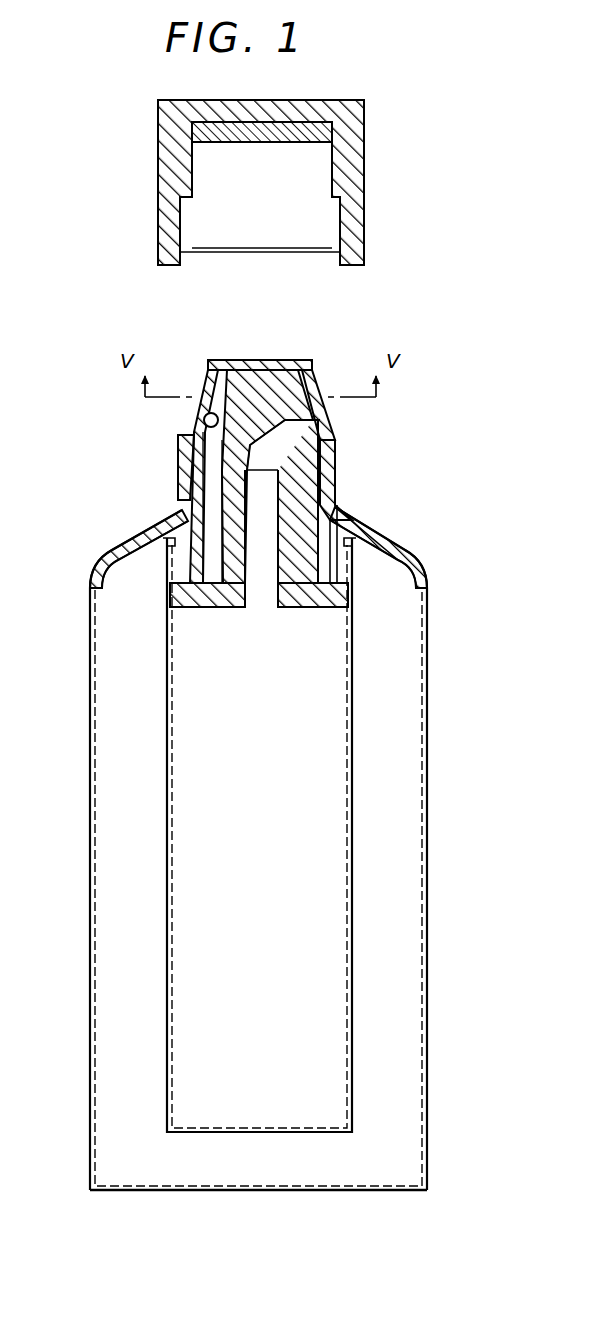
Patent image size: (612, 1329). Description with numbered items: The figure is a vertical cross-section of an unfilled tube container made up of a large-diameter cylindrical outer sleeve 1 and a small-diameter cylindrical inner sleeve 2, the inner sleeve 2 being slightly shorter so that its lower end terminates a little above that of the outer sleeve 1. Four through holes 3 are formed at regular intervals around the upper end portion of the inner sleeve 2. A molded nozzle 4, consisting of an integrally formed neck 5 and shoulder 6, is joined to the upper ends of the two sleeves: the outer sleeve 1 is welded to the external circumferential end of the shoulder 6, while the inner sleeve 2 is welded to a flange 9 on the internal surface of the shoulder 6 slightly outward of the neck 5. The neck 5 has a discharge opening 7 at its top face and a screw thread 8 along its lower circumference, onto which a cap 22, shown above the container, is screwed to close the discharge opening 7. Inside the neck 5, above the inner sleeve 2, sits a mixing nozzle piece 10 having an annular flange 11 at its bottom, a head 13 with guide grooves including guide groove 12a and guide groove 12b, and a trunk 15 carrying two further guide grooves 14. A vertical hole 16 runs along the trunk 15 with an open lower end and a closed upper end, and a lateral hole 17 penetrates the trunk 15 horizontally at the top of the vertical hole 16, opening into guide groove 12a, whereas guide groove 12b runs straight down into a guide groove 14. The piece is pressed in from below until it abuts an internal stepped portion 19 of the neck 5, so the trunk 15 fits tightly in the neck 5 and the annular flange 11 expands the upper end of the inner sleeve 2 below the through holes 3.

The outer sleeve 1 is at (430, 818).
The inner sleeve 2 is at (352, 915).
The through holes 3 is at (128, 548).
The nozzle 4 is at (255, 482).
The neck 5 is at (331, 430).
The shoulder 6 is at (355, 576).
The discharge opening 7 is at (235, 365).
The screw thread 8 is at (338, 492).
The flange 9 is at (137, 540).
The mixing nozzle piece 10 is at (322, 422).
The annular flange 11 is at (218, 590).
The guide groove 12a is at (305, 362).
The guide groove 12b is at (205, 367).
The head 13 is at (262, 385).
The guide grooves 14 is at (198, 478).
The trunk 15 is at (215, 522).
The vertical hole 16 is at (265, 598).
The lateral hole 17 is at (300, 455).
The internal stepped portion 19 is at (204, 420).
The cap 22 is at (362, 147).